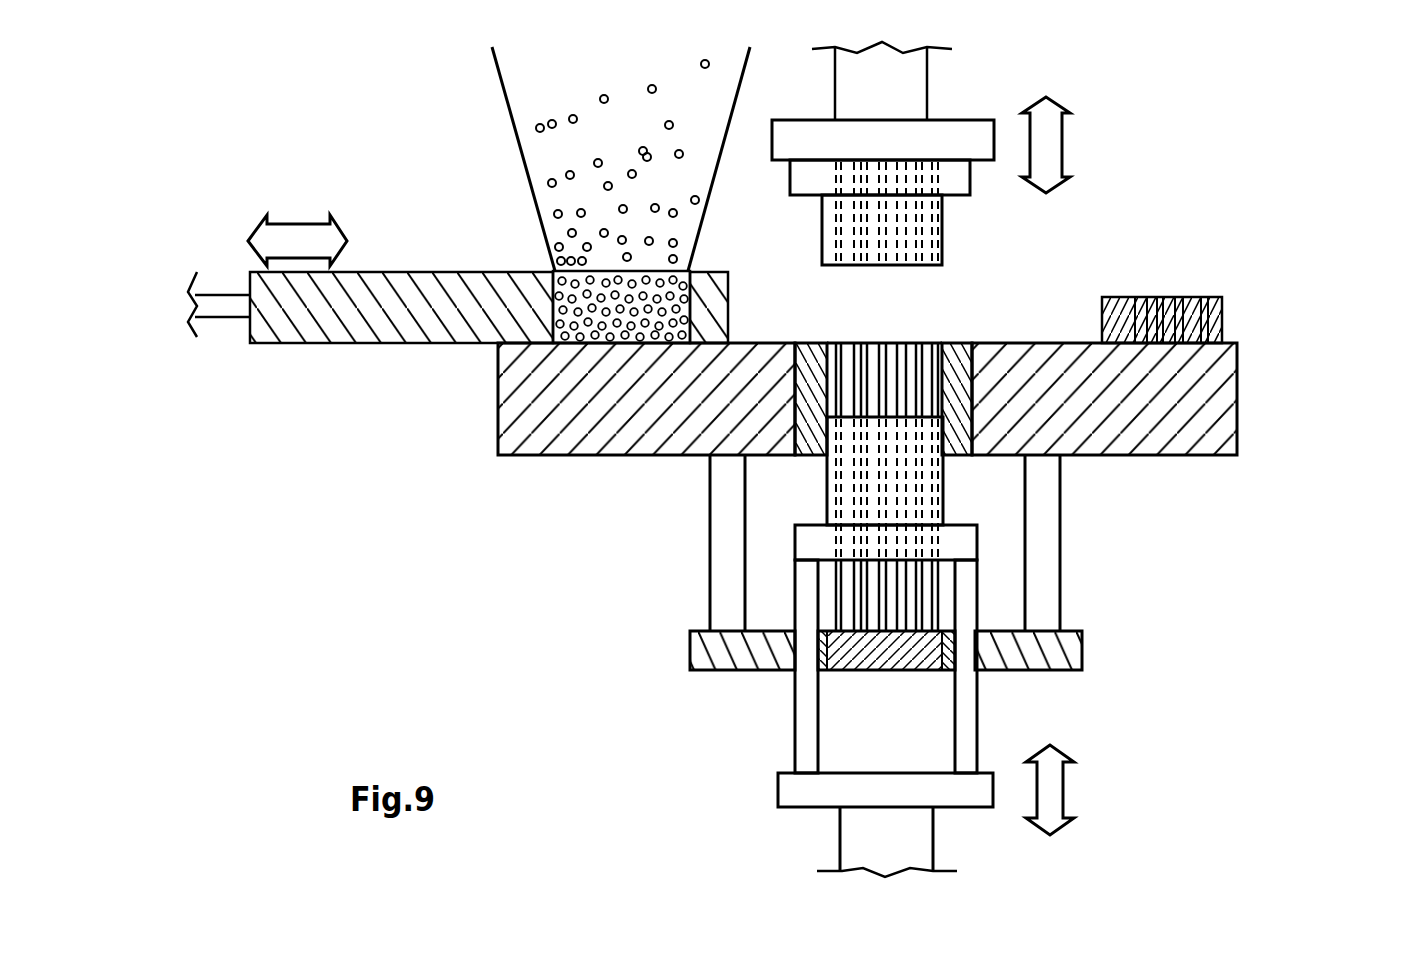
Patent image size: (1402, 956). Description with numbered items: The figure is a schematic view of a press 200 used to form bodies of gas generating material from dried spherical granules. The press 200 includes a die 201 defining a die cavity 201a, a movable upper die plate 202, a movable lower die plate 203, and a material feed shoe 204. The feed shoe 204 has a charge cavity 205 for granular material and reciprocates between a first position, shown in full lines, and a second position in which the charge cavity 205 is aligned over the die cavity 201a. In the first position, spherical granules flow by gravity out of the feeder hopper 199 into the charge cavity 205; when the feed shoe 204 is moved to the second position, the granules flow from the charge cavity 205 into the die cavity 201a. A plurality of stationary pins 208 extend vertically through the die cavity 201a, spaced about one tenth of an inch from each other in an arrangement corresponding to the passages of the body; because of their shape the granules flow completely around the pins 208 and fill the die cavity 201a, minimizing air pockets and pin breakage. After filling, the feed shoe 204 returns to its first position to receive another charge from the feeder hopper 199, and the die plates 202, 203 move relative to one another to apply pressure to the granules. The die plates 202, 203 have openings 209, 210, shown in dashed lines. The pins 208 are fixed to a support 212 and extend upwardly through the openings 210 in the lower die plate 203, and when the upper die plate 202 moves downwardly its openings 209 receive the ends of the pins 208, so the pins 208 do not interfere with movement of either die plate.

The feeder hopper 199 is at (507, 116).
The press 200 is at (1163, 184).
The die 201 is at (1195, 398).
The die cavity 201a is at (963, 393).
The upper die plate 202 is at (942, 235).
The lower die plate 203 is at (943, 478).
The material feed shoe 204 is at (400, 318).
The charge cavity 205 is at (569, 318).
The stationary pins 208 is at (925, 345).
The openings 209 is at (832, 231).
The openings 210 is at (940, 513).
The support 212 is at (875, 647).